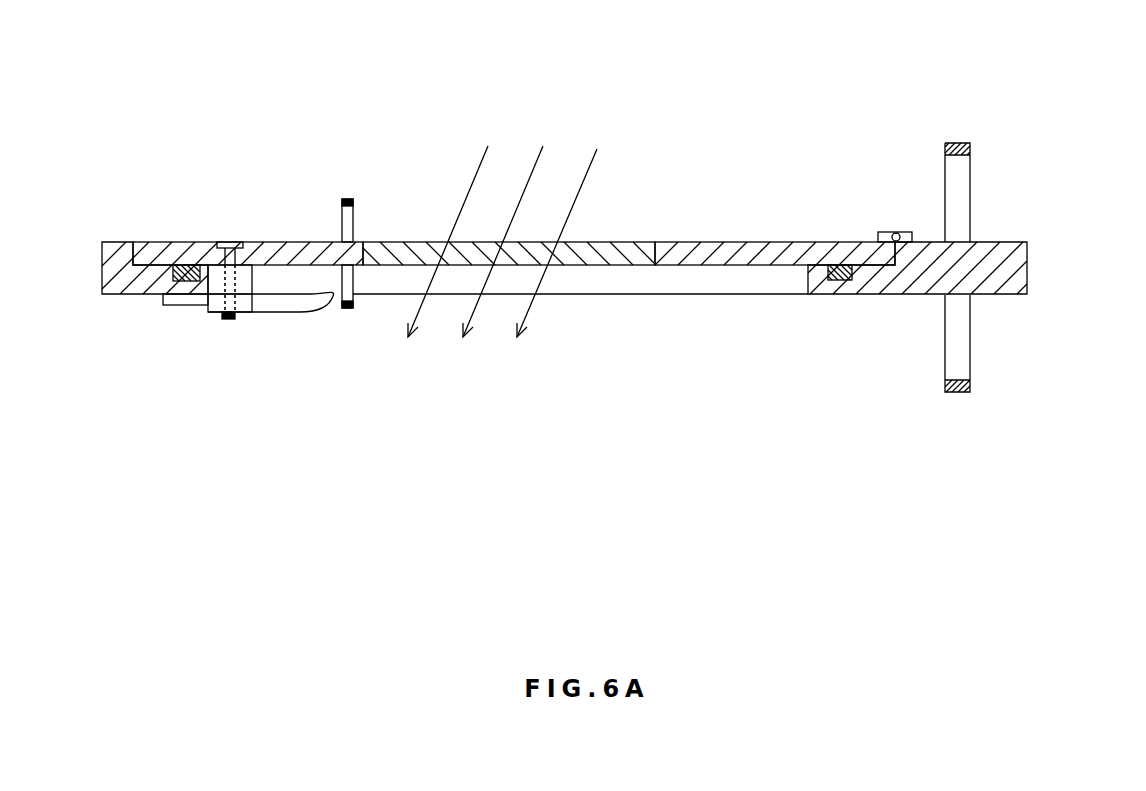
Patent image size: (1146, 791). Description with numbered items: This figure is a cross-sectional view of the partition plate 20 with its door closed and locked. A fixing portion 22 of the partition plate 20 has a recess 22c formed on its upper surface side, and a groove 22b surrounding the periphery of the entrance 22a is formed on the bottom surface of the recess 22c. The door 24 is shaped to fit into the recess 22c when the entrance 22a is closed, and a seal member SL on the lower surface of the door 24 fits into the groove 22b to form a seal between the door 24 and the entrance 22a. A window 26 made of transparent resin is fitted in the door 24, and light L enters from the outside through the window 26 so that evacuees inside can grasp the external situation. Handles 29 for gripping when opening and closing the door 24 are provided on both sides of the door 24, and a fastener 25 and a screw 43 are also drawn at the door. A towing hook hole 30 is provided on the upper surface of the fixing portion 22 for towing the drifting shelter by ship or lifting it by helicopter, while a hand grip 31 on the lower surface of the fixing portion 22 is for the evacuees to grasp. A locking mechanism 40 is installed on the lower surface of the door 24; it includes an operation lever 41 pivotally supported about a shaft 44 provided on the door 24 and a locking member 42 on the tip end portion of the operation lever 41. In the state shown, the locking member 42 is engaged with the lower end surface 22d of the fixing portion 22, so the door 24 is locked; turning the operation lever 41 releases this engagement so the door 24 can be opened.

The partition plate 20 is at (793, 107).
The fixing portion 22 is at (578, 299).
The entrance 22a is at (683, 280).
The groove 22b is at (850, 283).
The recess 22c is at (148, 243).
The lower end surface 22d is at (113, 295).
The door 24 is at (680, 250).
The nut 25 is at (888, 232).
The window 26 is at (622, 250).
The handles 29 is at (355, 210).
The towing hook hole 30 is at (955, 143).
The hand grip 31 is at (958, 392).
The locking mechanism 40 is at (243, 315).
The operation lever 41 is at (213, 305).
The locking member 42 is at (175, 300).
The screw 43 is at (238, 243).
The shaft 44 is at (245, 283).
The seal member SL is at (187, 243).
The light L is at (502, 219).